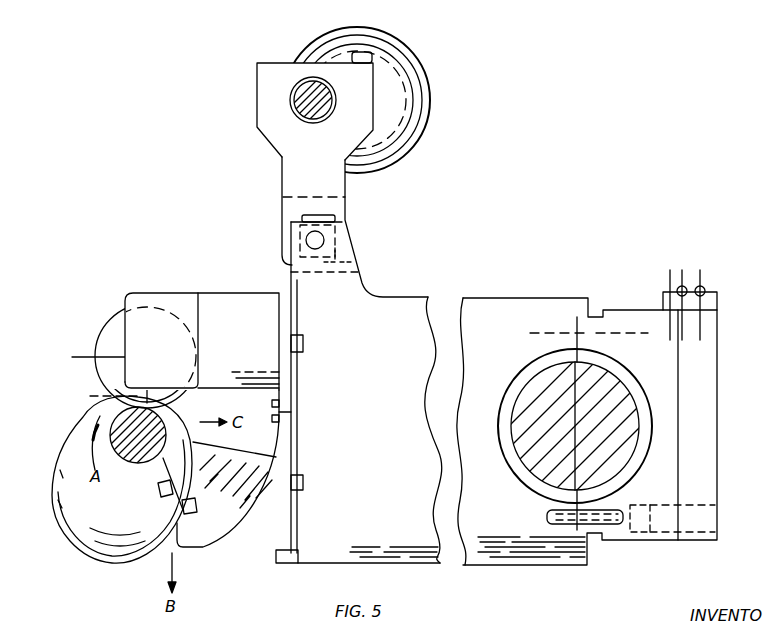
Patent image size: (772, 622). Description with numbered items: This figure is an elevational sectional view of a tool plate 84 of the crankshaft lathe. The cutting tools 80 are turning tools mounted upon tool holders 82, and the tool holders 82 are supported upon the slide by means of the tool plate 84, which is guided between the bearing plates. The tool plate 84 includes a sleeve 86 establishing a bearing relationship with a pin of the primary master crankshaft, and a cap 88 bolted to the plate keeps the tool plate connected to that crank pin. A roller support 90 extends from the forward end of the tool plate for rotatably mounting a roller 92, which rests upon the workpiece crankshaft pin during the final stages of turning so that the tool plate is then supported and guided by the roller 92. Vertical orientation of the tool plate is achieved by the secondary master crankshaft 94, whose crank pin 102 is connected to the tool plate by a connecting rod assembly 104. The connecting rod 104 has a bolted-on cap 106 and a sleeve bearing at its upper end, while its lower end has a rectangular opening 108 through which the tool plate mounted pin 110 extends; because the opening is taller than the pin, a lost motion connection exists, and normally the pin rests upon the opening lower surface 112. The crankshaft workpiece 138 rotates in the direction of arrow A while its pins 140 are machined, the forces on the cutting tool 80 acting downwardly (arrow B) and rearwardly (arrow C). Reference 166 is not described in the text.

The cutting tools 80 is at (177, 478).
The tool holders 82 is at (250, 528).
The tool plates 84 is at (493, 555).
The sleeves 86 is at (537, 358).
The caps 88 is at (633, 322).
The roller supports 90 is at (232, 307).
The roller 92 is at (115, 327).
The secondary master crankshaft 94 is at (418, 92).
The crank pins 102 is at (301, 92).
The connecting rod assembly 104 is at (293, 165).
The cap 106 is at (265, 90).
The rectangular opening 108 is at (303, 208).
The pin 110 is at (325, 240).
The opening lower surface 112 is at (360, 268).
The crankshaft workpiece 138 is at (127, 557).
The pins 140 is at (128, 420).
The shaft 166 is at (626, 408).